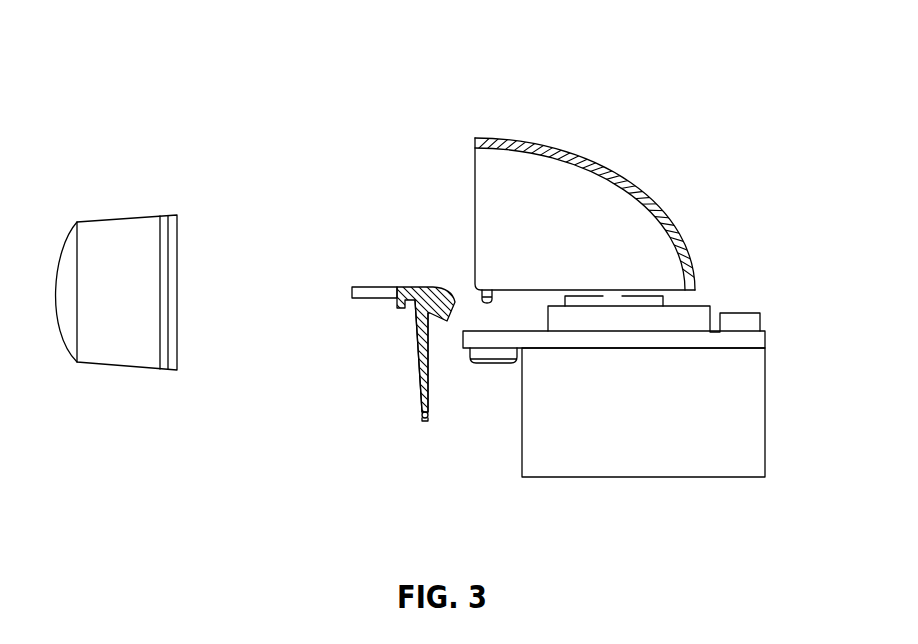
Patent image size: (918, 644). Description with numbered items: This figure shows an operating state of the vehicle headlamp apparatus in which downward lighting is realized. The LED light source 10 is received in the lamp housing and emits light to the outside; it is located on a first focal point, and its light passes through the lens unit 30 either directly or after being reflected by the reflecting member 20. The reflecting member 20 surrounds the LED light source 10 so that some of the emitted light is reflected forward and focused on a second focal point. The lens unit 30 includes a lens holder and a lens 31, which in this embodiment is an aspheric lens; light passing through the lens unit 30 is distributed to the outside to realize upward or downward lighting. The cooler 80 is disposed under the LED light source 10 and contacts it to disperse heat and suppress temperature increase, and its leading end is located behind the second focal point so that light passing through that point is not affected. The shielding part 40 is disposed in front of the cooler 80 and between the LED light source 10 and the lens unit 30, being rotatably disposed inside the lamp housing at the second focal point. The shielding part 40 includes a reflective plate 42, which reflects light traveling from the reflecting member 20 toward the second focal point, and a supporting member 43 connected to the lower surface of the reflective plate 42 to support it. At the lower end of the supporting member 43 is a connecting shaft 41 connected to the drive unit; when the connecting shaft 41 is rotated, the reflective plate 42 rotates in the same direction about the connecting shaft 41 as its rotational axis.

The LED light source 10 is at (610, 298).
The reflecting member 20 is at (588, 153).
The lens unit 30 is at (124, 209).
The lens 31 is at (117, 227).
The shielding part 40 is at (422, 359).
The connecting shaft 41 is at (430, 415).
The reflective plate 42 is at (368, 287).
The supporting member 43 is at (418, 360).
The cooler 80 is at (746, 325).